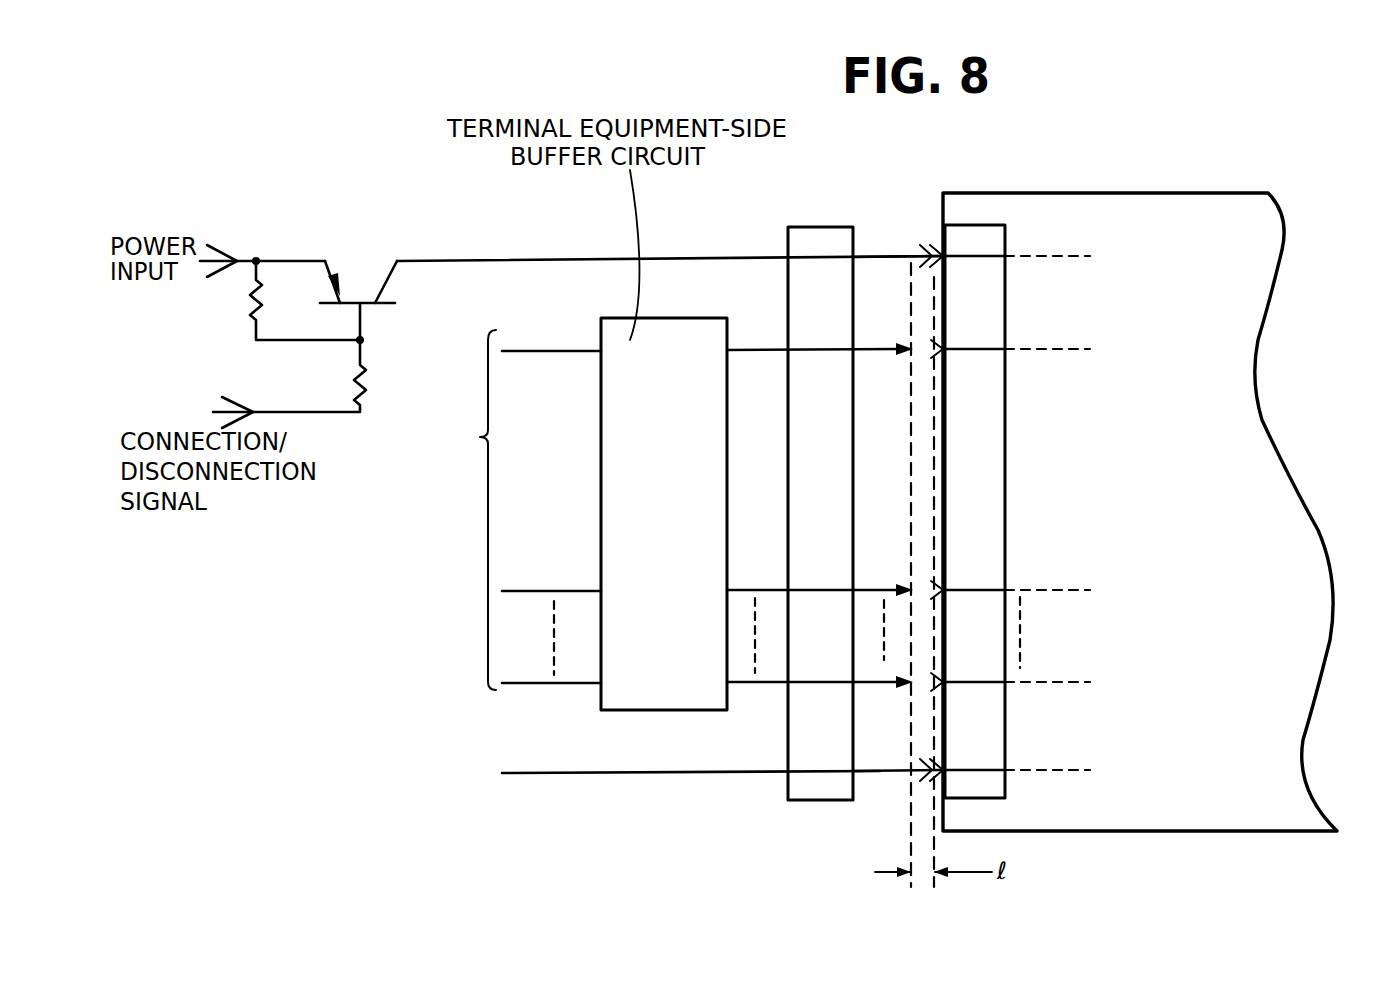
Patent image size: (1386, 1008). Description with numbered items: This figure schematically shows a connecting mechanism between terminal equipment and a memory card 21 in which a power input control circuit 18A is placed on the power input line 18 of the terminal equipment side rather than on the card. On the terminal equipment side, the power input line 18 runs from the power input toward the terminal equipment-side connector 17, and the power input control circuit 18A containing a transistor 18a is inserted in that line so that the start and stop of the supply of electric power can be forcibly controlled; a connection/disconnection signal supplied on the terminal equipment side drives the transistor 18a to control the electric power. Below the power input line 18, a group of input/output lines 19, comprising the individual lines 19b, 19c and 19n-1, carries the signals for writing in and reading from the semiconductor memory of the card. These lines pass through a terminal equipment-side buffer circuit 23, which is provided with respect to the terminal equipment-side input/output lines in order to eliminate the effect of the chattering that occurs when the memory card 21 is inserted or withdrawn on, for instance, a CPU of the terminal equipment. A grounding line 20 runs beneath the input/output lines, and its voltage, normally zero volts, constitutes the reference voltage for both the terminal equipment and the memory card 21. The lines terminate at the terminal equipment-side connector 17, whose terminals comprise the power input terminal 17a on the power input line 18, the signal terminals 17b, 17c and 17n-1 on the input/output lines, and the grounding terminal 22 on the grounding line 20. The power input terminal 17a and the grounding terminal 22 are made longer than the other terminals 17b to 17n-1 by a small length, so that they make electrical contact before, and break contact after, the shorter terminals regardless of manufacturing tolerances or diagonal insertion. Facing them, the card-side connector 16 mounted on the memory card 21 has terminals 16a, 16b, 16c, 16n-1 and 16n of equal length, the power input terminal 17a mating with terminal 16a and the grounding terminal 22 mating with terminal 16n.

The card-side connector 16 is at (985, 225).
The card-side connector terminal 16a is at (1033, 255).
The card-side connector terminal 16b is at (1030, 347).
The card-side connector terminal 16c is at (1030, 589).
The card-side connector terminal 16n-1 is at (1035, 681).
The card-side connector terminal 16n is at (1032, 769).
The terminal equipment-side connector 17 is at (825, 227).
The power input terminal 17a is at (880, 255).
The terminal equipment-side connector terminal 17b is at (880, 347).
The terminal equipment-side connector terminal 17c is at (880, 589).
The terminal equipment-side connector terminal 17n-1 is at (882, 681).
The power input line 18 is at (572, 258).
The power input control circuit 18A is at (289, 313).
The transistor 18a is at (362, 278).
The input/output lines 19 is at (500, 510).
The input/output line 19b is at (555, 350).
The input/output line 19c is at (550, 590).
The input/output line 19n-1 is at (548, 687).
The grounding line 20 is at (548, 775).
The memory card 21 is at (1292, 460).
The grounding terminal 22 is at (882, 772).
The terminal equipment-side buffer circuit 23 is at (660, 318).